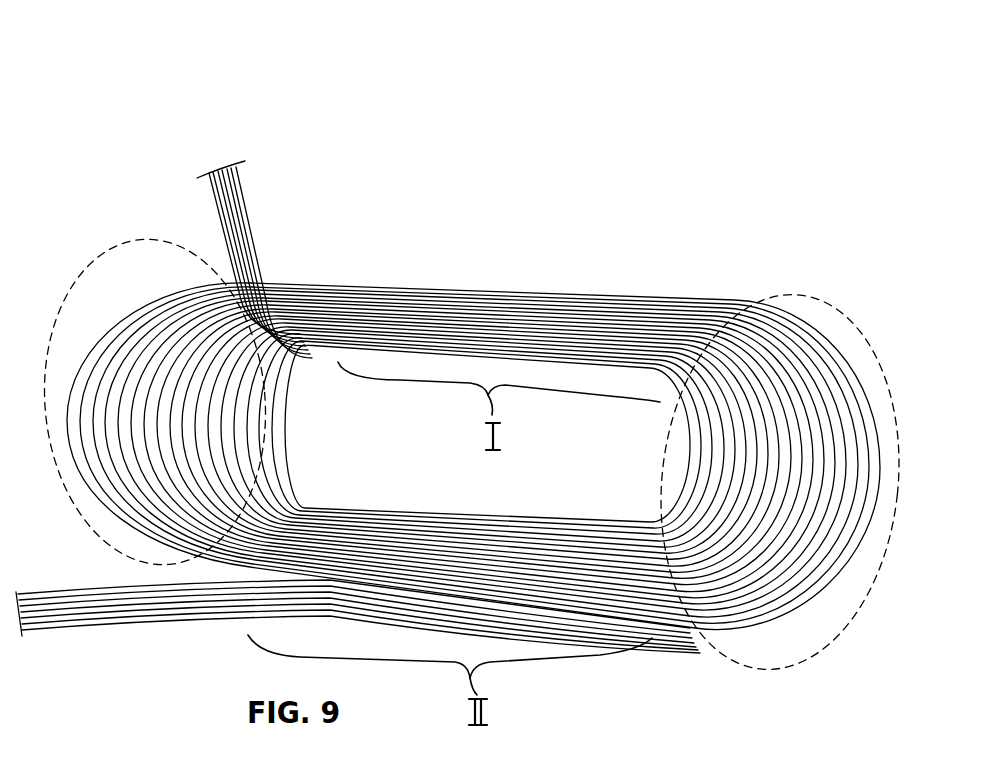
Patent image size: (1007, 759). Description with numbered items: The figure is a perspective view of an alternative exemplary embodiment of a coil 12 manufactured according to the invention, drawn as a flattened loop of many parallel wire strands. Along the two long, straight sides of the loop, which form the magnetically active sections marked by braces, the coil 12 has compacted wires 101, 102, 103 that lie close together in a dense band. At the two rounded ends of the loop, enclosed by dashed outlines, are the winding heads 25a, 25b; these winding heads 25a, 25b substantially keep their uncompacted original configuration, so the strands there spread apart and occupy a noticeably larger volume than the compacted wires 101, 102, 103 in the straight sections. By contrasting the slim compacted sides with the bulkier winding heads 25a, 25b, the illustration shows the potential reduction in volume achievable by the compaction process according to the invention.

The coil 12 is at (141, 161).
The winding head 25a is at (852, 322).
The winding head 25b is at (123, 248).
The compacted wire 101 is at (578, 302).
The compacted wire 102 is at (487, 315).
The compacted wire 103 is at (416, 330).